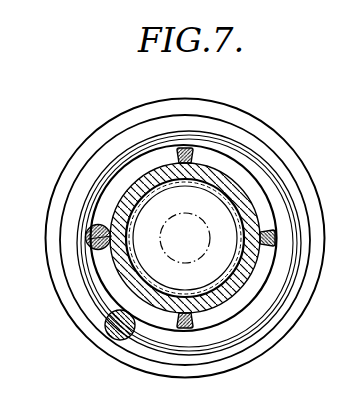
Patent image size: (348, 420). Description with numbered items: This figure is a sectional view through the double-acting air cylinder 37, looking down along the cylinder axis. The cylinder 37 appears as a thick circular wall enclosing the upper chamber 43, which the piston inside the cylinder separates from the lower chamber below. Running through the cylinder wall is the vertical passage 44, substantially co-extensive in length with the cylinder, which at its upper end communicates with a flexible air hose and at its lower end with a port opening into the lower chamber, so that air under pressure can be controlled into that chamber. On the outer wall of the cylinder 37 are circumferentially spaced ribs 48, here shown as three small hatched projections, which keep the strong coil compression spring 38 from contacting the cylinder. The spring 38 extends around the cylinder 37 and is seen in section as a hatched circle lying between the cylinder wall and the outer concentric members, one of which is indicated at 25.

The housing 25 is at (162, 238).
The double-acting air cylinder 37 is at (241, 189).
The upper chamber 43 is at (201, 201).
The ribs 48 is at (193, 152).
The vertical passage 44 is at (108, 243).
The coil compression spring 38 is at (98, 308).